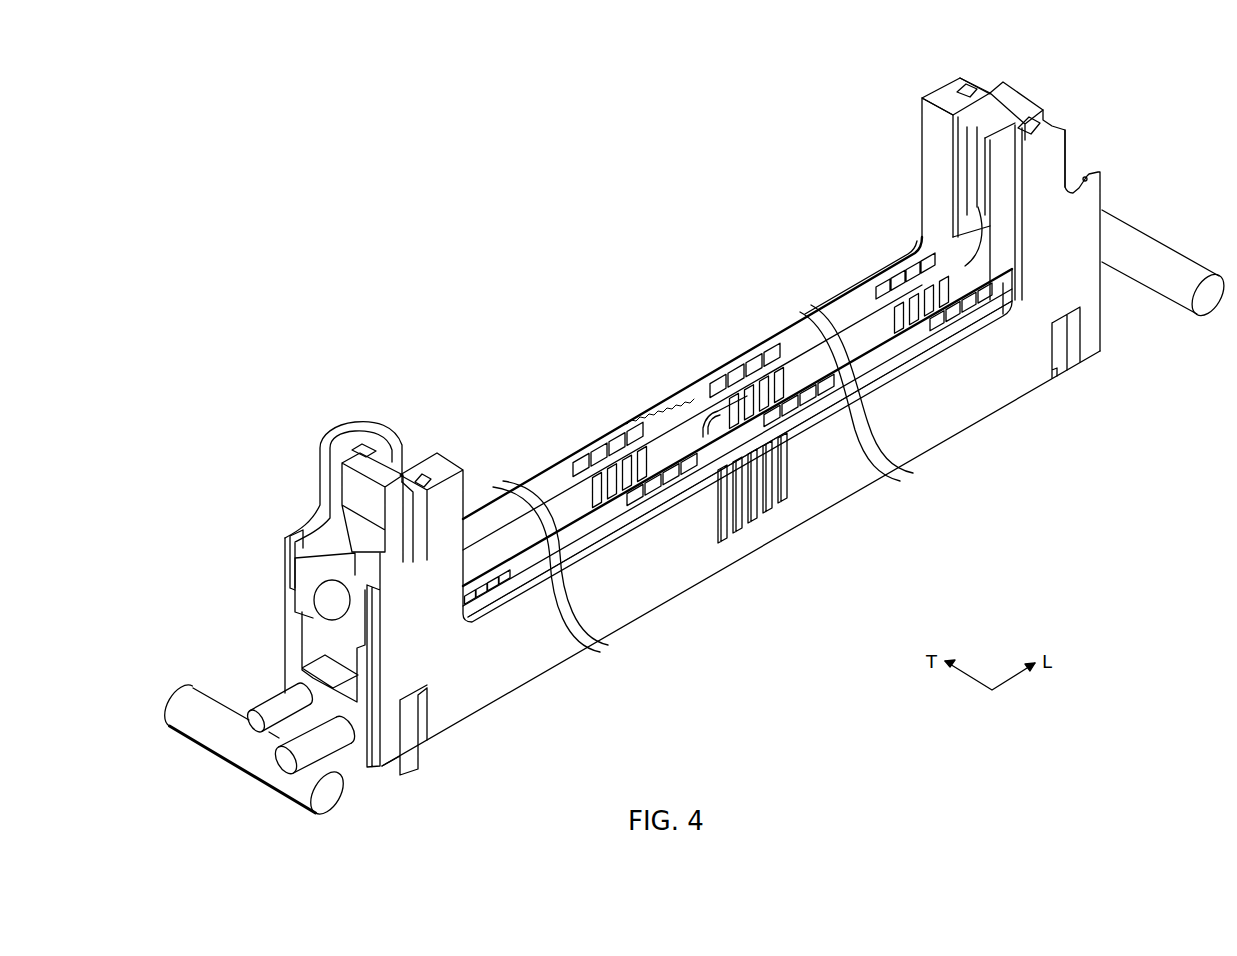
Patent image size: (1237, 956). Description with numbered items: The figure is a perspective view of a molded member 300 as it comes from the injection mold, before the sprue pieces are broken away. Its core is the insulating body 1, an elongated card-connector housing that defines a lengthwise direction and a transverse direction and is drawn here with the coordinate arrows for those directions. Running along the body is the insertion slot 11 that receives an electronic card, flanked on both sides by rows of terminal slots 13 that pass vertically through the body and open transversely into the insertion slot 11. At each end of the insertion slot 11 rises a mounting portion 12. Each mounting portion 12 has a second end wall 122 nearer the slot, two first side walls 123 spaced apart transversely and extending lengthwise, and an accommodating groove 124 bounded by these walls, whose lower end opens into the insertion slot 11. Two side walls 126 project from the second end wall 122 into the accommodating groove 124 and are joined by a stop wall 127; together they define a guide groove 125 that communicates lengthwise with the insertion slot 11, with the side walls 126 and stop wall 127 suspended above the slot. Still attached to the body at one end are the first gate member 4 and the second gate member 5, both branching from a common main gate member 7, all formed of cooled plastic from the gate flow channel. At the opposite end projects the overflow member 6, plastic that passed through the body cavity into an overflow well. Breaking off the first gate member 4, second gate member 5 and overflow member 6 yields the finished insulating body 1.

The molded member 300 is at (313, 176).
The insulating body 1 is at (672, 393).
The insertion slot 11 is at (872, 334).
The mounting portion 12 is at (288, 573).
The terminal slot 13 is at (613, 450).
The second end wall 122 is at (437, 463).
The first side wall 123 is at (293, 613).
The accommodating groove 124 is at (318, 634).
The guide groove 125 is at (410, 457).
The side wall 126 is at (370, 455).
The stop wall 127 is at (357, 493).
The first gate member 4 is at (330, 745).
The second gate member 5 is at (275, 701).
The overflow member 6 is at (1103, 222).
The main gate member 7 is at (238, 744).